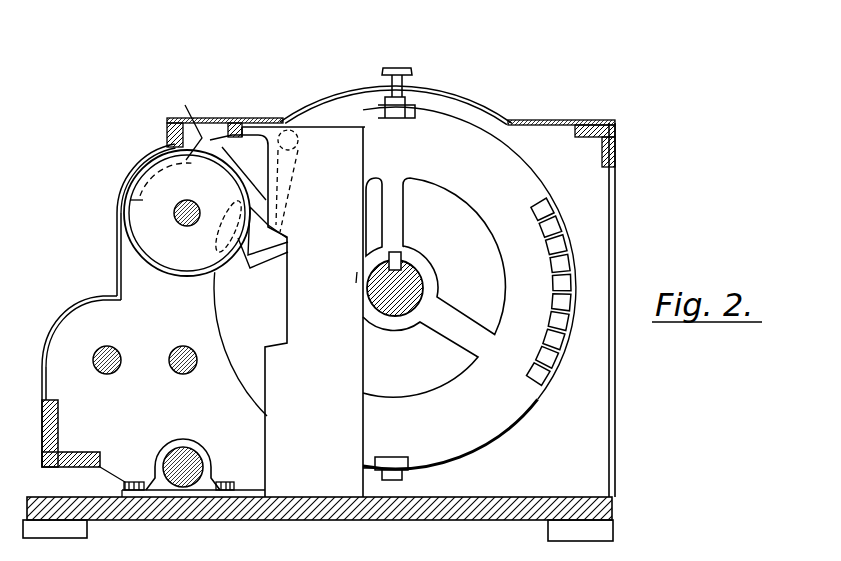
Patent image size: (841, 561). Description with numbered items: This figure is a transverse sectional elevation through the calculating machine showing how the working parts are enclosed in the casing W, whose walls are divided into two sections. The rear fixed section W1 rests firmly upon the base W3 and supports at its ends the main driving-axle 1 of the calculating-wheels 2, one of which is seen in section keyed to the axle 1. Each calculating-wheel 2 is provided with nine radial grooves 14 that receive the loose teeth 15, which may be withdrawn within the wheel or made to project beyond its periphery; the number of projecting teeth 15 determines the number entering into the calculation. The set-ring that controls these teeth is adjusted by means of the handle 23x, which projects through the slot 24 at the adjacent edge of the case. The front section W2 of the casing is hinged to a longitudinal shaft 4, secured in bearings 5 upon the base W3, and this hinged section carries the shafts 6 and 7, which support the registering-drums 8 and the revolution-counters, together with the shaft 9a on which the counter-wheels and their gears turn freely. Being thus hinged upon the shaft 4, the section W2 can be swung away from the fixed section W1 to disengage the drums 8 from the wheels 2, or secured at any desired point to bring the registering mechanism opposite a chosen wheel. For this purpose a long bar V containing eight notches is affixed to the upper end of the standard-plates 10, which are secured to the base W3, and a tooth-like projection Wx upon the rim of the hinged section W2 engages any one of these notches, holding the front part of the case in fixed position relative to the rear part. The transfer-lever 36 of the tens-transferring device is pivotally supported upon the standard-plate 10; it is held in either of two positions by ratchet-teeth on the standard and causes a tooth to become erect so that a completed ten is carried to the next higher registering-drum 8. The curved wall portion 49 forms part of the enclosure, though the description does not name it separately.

The main driving-axle 1 is at (407, 278).
The calculating-wheel 2 is at (395, 288).
The longitudinal shaft 4 is at (183, 470).
The bearing 5 is at (157, 462).
The shaft 6 is at (185, 200).
The shaft 7 is at (114, 360).
The registering-drum 8 is at (180, 253).
The shaft 9a is at (192, 343).
The standard-plate 10 is at (287, 312).
The radial groove 14 is at (562, 238).
The loose tooth 15 is at (548, 203).
The handle 23x is at (401, 258).
The slot 24 is at (472, 87).
The transfer-lever 36 is at (280, 234).
The curved wall 49 is at (86, 298).
The casing W is at (233, 110).
The rear fixed section W1 is at (561, 308).
The hinged section W2 is at (45, 383).
The base W3 is at (447, 513).
The tooth-like projection Wx is at (167, 101).
The long bar V is at (208, 127).